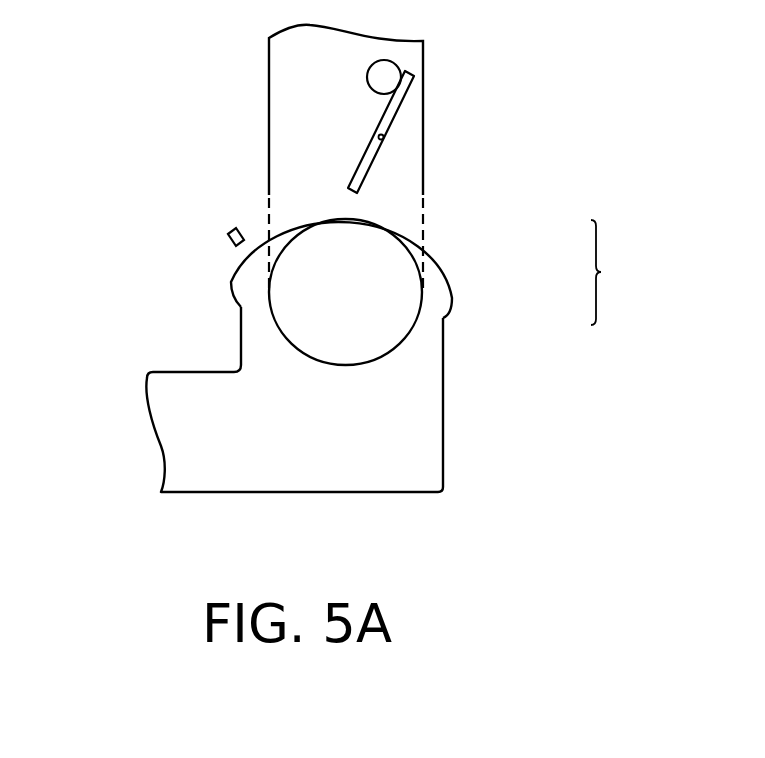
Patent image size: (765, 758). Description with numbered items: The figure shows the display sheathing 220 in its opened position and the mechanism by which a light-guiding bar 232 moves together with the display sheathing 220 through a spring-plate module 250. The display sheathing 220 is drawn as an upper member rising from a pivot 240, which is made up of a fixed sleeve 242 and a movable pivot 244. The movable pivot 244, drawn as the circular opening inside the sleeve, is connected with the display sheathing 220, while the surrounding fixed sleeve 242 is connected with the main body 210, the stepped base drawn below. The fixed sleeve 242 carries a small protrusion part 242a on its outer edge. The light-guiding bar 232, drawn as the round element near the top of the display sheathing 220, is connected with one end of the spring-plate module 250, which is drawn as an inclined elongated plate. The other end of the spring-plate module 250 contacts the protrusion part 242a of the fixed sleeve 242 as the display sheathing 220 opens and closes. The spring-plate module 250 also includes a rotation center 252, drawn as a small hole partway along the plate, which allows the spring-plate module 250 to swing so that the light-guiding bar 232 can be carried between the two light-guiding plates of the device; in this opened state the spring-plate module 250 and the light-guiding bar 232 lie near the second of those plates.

The main body 210 is at (160, 390).
The display sheathing 220 is at (283, 73).
The light-guiding bar 232 is at (387, 68).
The pivot 240 is at (621, 272).
The fixed sleeve 242 is at (445, 255).
The protrusion part 242a is at (231, 234).
The movable pivot 244 is at (398, 305).
The spring-plate module 250 is at (410, 89).
The rotation center 252 is at (387, 135).